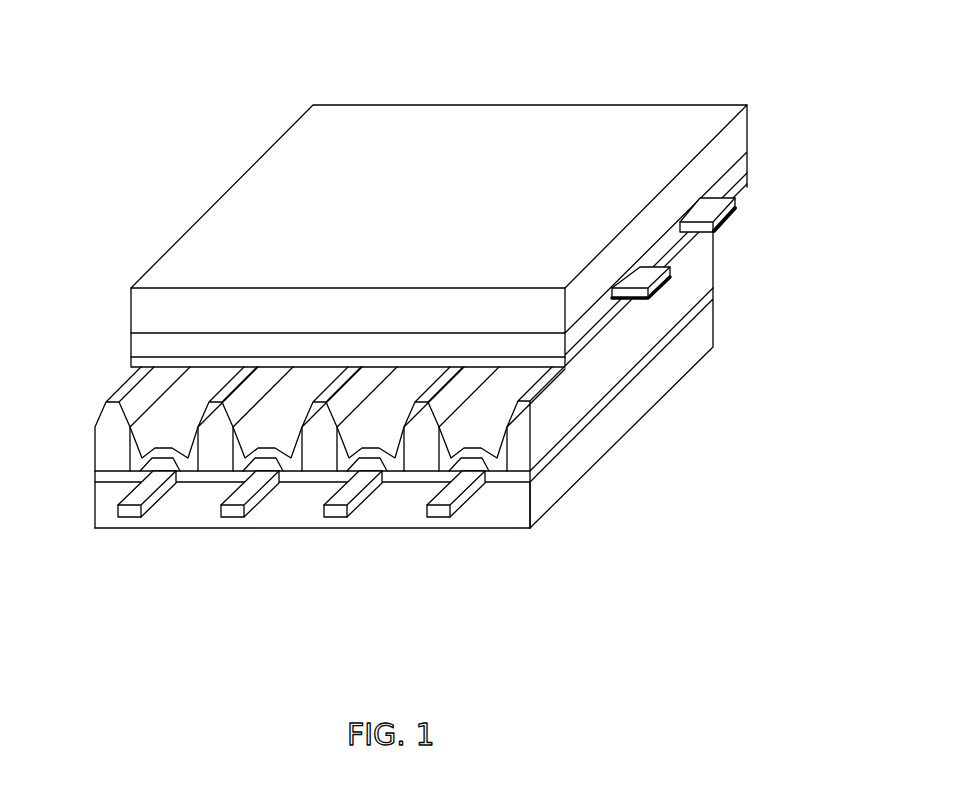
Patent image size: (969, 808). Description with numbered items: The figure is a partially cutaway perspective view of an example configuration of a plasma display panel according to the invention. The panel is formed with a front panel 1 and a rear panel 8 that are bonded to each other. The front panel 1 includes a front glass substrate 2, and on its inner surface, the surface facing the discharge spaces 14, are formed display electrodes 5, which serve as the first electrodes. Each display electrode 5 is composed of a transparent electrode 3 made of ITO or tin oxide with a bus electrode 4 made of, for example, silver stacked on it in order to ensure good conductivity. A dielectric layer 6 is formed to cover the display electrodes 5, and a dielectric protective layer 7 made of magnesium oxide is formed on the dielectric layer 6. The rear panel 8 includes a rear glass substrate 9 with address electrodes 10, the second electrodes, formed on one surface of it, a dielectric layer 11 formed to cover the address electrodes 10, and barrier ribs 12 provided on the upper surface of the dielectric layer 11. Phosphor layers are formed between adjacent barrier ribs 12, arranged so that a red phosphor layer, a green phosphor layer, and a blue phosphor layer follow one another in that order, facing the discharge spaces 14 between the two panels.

The front panel 1 is at (369, 118).
The front glass substrate 2 is at (740, 124).
The transparent electrode 3 is at (733, 207).
The bus electrode 4 is at (735, 216).
The display electrode 5 is at (827, 170).
The dielectric layer 6 is at (140, 348).
The dielectric protective layer 7 is at (131, 364).
The rear panel 8 is at (556, 546).
The rear glass substrate 9 is at (632, 395).
The address electrode 10 is at (462, 503).
The dielectric layer 11 is at (677, 330).
The barrier rib 12 is at (110, 445).
The discharge space 14 is at (188, 385).